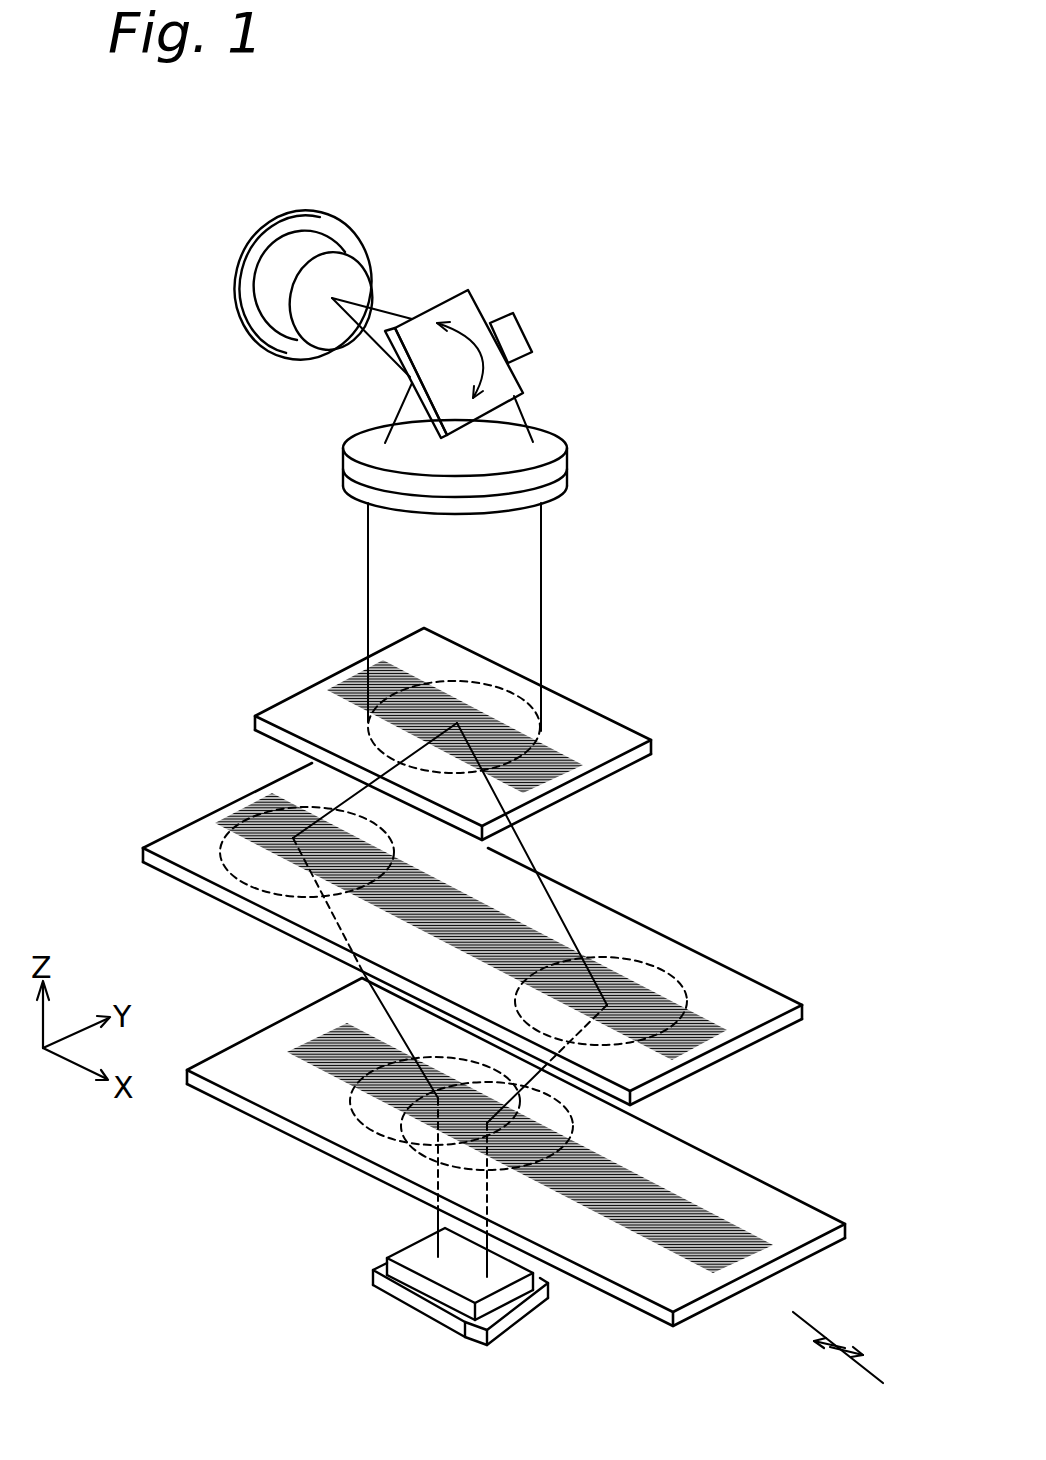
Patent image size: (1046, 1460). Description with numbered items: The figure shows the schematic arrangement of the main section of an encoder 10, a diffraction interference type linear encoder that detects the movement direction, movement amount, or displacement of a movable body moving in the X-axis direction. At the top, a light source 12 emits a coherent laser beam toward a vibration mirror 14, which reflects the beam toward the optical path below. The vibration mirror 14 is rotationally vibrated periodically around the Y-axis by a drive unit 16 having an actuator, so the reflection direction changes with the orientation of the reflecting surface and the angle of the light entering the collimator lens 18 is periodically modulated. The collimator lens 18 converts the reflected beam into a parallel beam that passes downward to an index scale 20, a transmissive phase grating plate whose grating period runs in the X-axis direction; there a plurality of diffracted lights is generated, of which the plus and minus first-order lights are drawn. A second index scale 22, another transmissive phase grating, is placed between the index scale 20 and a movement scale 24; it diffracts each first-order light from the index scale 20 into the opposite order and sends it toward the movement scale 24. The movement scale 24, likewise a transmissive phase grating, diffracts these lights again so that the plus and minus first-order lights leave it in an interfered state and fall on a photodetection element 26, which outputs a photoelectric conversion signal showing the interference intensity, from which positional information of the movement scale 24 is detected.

The encoder 10 is at (714, 276).
The light source 12 is at (331, 219).
The vibration mirror 14 is at (468, 303).
The drive unit 16 is at (525, 330).
The collimator lens 18 is at (557, 443).
The index scale 20 is at (567, 703).
The index scale 22 is at (690, 955).
The movement scale 24 is at (727, 1167).
The photodetection element 26 is at (393, 1257).